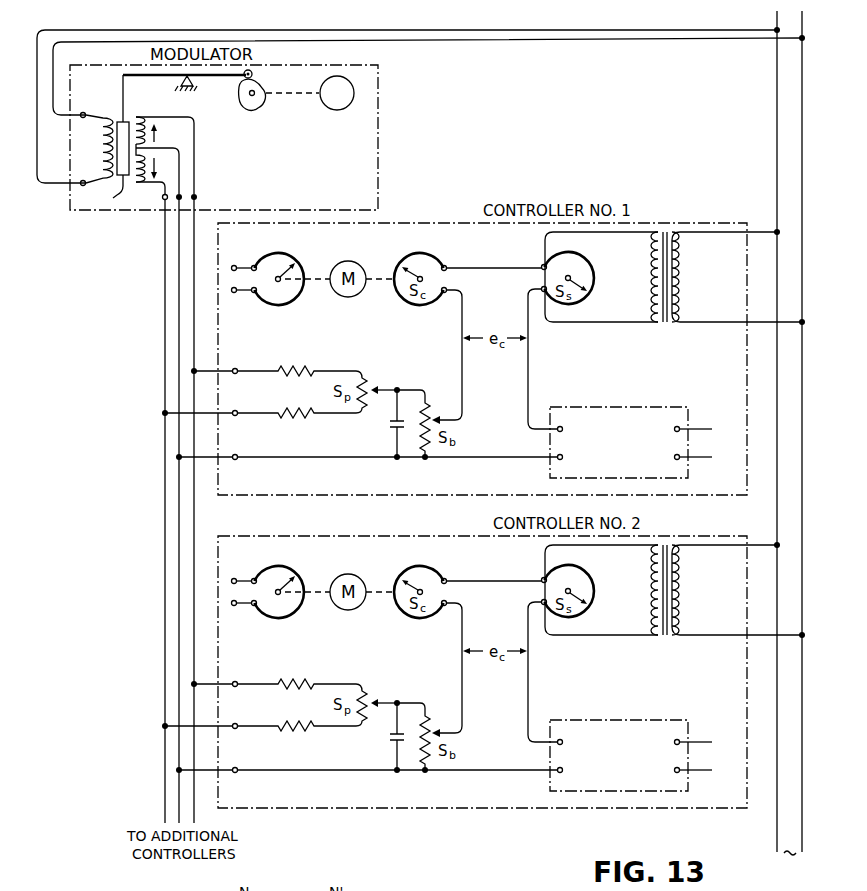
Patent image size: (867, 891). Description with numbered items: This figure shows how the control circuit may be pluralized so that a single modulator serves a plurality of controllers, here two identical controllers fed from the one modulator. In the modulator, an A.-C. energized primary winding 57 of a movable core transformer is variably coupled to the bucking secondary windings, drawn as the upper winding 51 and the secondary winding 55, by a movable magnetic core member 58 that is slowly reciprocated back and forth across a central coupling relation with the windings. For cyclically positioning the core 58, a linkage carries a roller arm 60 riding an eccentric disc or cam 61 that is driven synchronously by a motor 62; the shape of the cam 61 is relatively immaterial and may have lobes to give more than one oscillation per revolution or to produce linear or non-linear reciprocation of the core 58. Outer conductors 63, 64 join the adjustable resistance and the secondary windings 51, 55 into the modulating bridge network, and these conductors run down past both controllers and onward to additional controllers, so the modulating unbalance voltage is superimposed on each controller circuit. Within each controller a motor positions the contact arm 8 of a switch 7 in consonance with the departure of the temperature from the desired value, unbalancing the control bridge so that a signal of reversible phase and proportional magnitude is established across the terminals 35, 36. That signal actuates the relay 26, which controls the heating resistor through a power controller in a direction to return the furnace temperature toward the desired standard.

The rotary switch 7 is at (266, 257).
The contact arm 8 is at (276, 279).
The relay 26 is at (631, 442).
The terminal 35 is at (571, 429).
The terminal 36 is at (571, 457).
The modulator coil 51 is at (146, 117).
The secondary winding 55 is at (141, 185).
The primary winding 57 is at (103, 153).
The movable magnetic core member 58 is at (110, 165).
The roller arm 60 is at (253, 73).
The cam 61 is at (254, 107).
The motor 62 is at (341, 110).
The outer conductor 63 is at (196, 520).
The outer conductor 64 is at (163, 506).